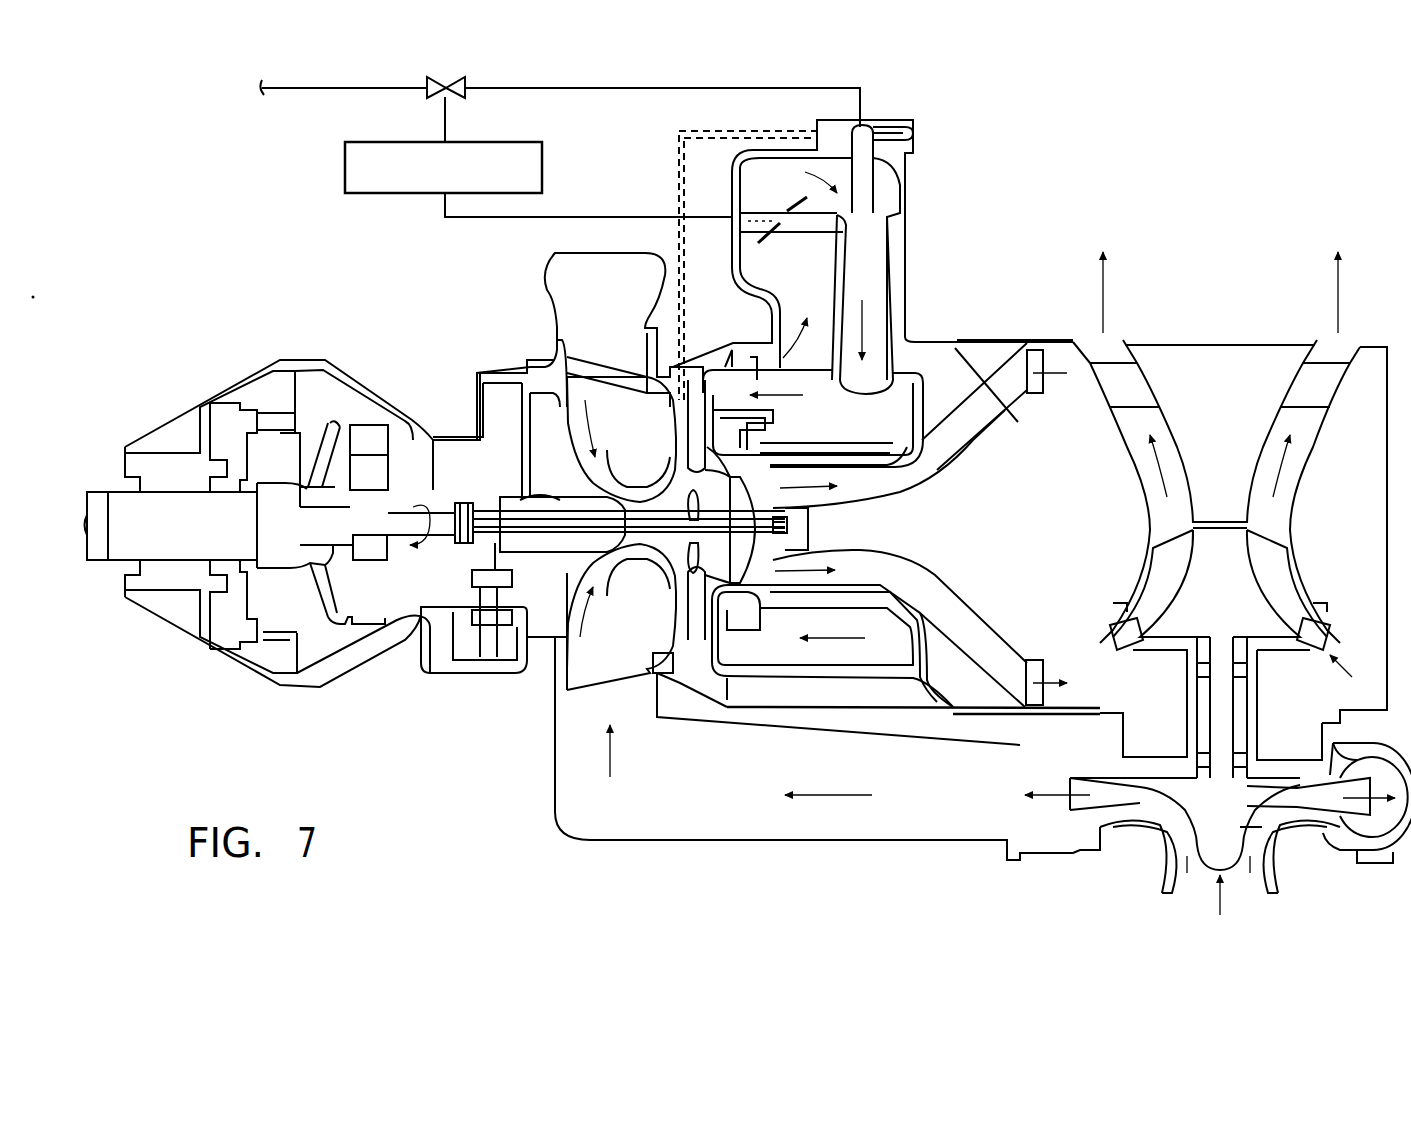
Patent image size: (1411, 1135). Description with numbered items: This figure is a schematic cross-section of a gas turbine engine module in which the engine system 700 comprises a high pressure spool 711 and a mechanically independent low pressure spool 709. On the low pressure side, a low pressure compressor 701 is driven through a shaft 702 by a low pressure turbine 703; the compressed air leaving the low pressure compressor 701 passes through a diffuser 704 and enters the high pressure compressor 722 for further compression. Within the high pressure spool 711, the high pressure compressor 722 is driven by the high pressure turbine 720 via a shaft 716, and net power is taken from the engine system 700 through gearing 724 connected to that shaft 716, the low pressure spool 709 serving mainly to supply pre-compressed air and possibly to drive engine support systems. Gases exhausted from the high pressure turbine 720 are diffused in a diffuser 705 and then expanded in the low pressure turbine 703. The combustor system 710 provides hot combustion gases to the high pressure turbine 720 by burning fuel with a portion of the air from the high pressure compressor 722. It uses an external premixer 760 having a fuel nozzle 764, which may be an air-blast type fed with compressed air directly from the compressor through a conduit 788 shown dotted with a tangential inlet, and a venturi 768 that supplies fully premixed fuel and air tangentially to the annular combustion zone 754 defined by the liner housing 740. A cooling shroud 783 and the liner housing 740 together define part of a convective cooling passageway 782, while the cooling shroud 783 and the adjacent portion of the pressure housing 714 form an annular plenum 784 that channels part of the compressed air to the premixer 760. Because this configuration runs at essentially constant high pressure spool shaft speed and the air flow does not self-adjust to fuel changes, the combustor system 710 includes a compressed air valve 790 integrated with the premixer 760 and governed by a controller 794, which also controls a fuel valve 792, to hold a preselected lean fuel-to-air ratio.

The engine system 700 is at (515, 293).
The low pressure compressor 701 is at (1180, 818).
The shaft 702 is at (1228, 718).
The low pressure turbine 703 is at (1282, 572).
The diffuser 704 is at (788, 842).
The diffuser 705 is at (1112, 655).
The low pressure spool 709 is at (1247, 240).
The combustor system 710 is at (958, 318).
The high pressure spool 711 is at (417, 725).
The pressure housing 714 is at (823, 713).
The shaft 716 is at (693, 523).
The high pressure turbine 720 is at (862, 542).
The high pressure compressor 722 is at (660, 575).
The gearing 724 is at (245, 672).
The liner housing 740 is at (905, 420).
The annular combustion zone 754 is at (880, 430).
The external premixer 760 is at (940, 177).
The fuel nozzle 764 is at (866, 122).
The venturi 768 is at (886, 270).
The convective cooling passageway 782 is at (754, 376).
The cooling shroud 783 is at (813, 362).
The annular plenum 784 is at (852, 690).
The conduit 788 is at (680, 168).
The compressed air valve 790 is at (797, 215).
The fuel valve 792 is at (460, 95).
The controller 794 is at (345, 160).